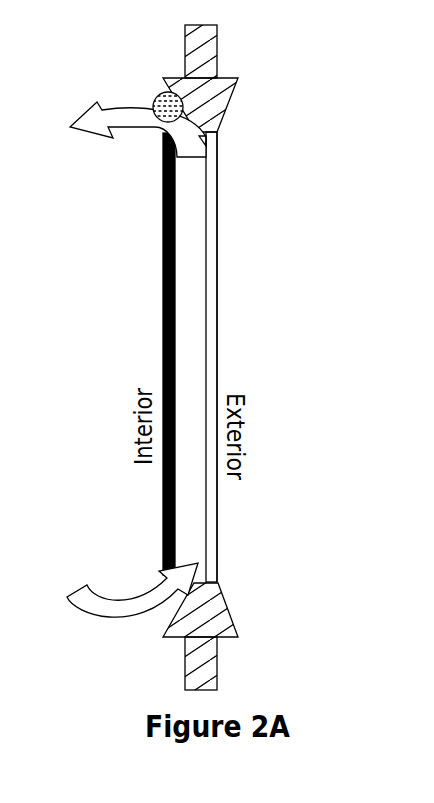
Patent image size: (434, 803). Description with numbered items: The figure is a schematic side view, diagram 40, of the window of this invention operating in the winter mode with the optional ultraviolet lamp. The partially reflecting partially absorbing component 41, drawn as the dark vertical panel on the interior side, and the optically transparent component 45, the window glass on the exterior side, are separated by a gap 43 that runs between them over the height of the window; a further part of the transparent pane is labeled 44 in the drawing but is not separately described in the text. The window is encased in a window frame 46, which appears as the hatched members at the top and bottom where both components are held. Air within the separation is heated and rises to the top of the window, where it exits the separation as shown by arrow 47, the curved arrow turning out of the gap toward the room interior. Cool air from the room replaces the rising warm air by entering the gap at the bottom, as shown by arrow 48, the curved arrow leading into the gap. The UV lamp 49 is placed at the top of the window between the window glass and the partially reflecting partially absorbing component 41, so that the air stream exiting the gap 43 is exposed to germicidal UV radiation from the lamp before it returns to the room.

The diagram 40 is at (243, 357).
The partially reflecting partially absorbing component 41 is at (163, 282).
The gap 43 is at (190, 353).
The exterior pane 44 is at (206, 240).
The optically transparent component 45 is at (217, 270).
The window frame 46 is at (219, 109).
The arrow 47 is at (138, 134).
The arrow 48 is at (132, 585).
The UV lamp 49 is at (162, 94).